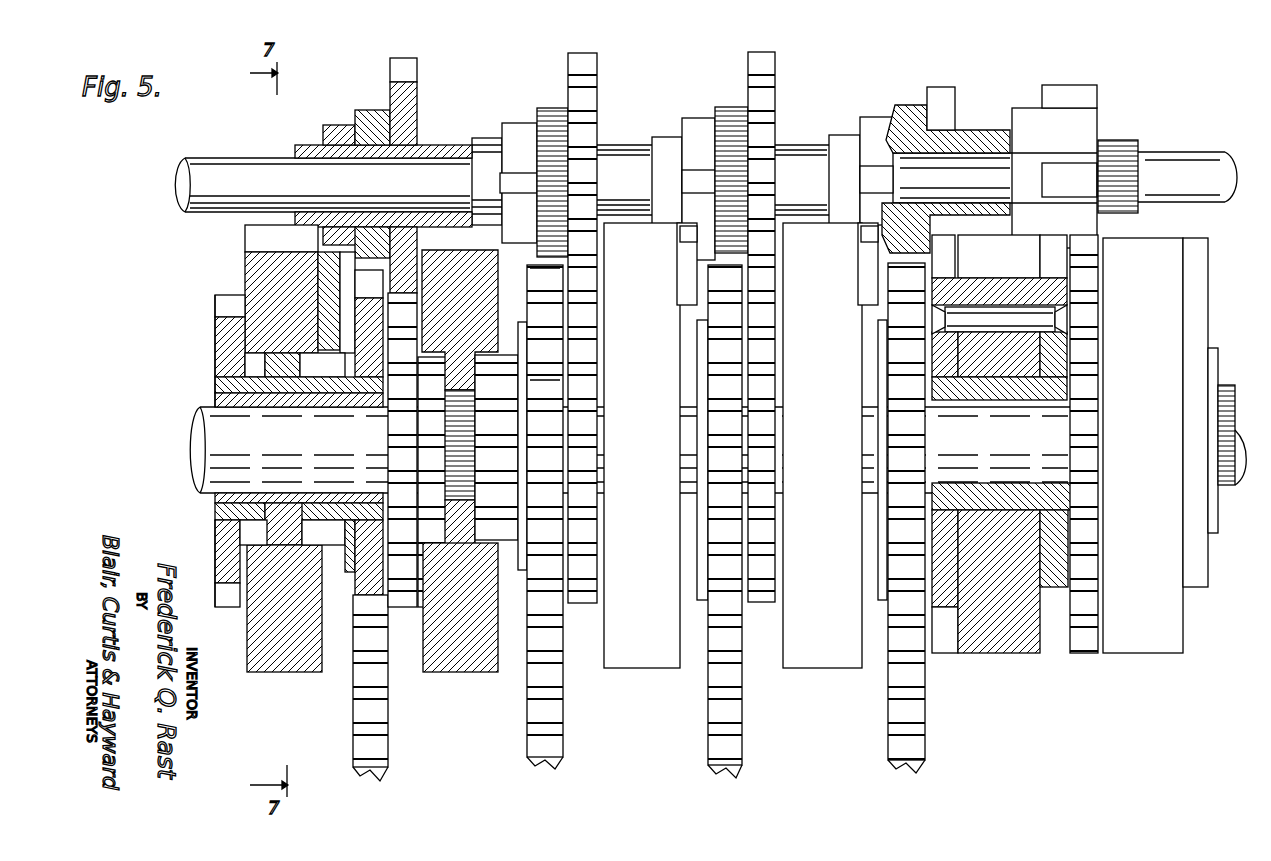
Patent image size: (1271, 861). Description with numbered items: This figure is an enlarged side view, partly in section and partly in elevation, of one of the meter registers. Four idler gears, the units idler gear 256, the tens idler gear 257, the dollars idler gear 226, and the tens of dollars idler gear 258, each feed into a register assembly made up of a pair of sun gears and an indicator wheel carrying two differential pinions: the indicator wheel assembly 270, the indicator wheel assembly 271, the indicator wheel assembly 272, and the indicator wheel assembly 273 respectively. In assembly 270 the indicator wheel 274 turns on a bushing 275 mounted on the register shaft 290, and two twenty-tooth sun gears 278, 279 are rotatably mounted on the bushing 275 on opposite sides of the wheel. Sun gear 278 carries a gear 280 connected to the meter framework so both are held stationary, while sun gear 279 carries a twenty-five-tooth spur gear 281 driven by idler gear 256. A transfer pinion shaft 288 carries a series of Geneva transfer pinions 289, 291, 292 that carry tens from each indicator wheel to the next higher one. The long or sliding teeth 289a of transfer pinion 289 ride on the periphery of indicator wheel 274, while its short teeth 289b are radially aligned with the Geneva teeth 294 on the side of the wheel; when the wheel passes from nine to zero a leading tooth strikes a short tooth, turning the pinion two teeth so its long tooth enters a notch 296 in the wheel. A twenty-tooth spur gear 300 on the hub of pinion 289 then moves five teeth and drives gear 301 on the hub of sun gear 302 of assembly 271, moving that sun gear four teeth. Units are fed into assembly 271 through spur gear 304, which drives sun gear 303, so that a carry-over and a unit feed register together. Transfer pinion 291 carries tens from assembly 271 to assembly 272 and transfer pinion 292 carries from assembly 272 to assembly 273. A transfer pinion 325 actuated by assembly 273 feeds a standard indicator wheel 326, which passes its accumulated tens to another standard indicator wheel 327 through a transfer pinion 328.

The transfer pinion shaft 288 is at (175, 176).
The long or sliding teeth 289a is at (297, 152).
The short teeth 289b is at (340, 125).
The Geneva transfer pinion 289 is at (356, 104).
The spur gear 300 is at (412, 74).
The Geneva transfer pinion 291 is at (546, 104).
The Geneva transfer pinion 292 is at (703, 116).
The transfer pinion 325 is at (940, 100).
The transfer pinion 328 is at (1075, 131).
The notch 296 is at (272, 240).
The Geneva teeth 294 is at (312, 285).
The bushing 275 is at (216, 399).
The register shaft 290 is at (216, 447).
The sun gear 278 is at (218, 571).
The sun gear 279 is at (313, 532).
The gear 280 is at (217, 600).
The indicator wheel 274 is at (296, 648).
The indicator wheel assembly 270 is at (238, 660).
The spur gear 281 is at (356, 572).
The units idler gear 256 is at (385, 729).
The gear 301 is at (407, 331).
The sun gear 302 is at (432, 508).
The sun gear 303 is at (495, 503).
The spur gear 304 is at (541, 378).
The indicator wheel assembly 271 is at (470, 680).
The tens idler gear 257 is at (566, 735).
The indicator wheel assembly 272 is at (645, 676).
The indicator wheel assembly 273 is at (823, 676).
The dollars idler gear 226 is at (746, 735).
The tens of dollars idler gear 258 is at (925, 720).
The standard indicator wheel 326 is at (1068, 329).
The standard indicator wheel 327 is at (1165, 407).